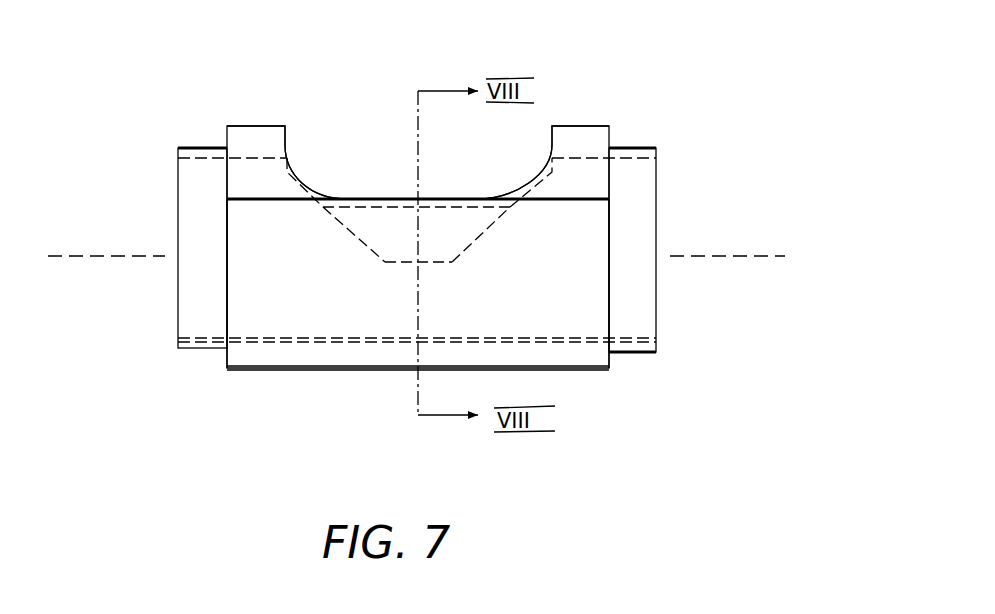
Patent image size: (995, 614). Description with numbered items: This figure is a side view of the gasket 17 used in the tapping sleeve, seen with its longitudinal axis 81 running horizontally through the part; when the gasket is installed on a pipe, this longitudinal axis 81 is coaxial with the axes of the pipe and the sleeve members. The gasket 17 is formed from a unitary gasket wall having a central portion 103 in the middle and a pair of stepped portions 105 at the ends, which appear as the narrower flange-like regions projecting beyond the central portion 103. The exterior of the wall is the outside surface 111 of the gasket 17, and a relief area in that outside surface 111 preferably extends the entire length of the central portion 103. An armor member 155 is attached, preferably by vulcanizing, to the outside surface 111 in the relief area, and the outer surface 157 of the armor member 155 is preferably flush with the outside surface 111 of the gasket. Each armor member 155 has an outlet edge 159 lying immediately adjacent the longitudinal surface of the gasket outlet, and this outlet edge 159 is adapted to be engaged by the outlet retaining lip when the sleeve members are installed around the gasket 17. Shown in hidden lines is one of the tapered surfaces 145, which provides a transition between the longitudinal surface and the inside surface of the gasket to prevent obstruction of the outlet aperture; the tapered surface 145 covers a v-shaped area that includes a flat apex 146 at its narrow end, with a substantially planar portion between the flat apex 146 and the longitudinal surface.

The gasket 17 is at (589, 57).
The longitudinal axis 81 is at (125, 255).
The central portion 103 is at (589, 120).
The stepped portions 105 is at (646, 144).
The outside surface 111 is at (250, 142).
The tapered surface 145 is at (445, 232).
The flat apex 146 is at (437, 262).
The armor member 155 is at (585, 287).
The outer surface 157 is at (249, 315).
The outlet edge 159 is at (255, 198).